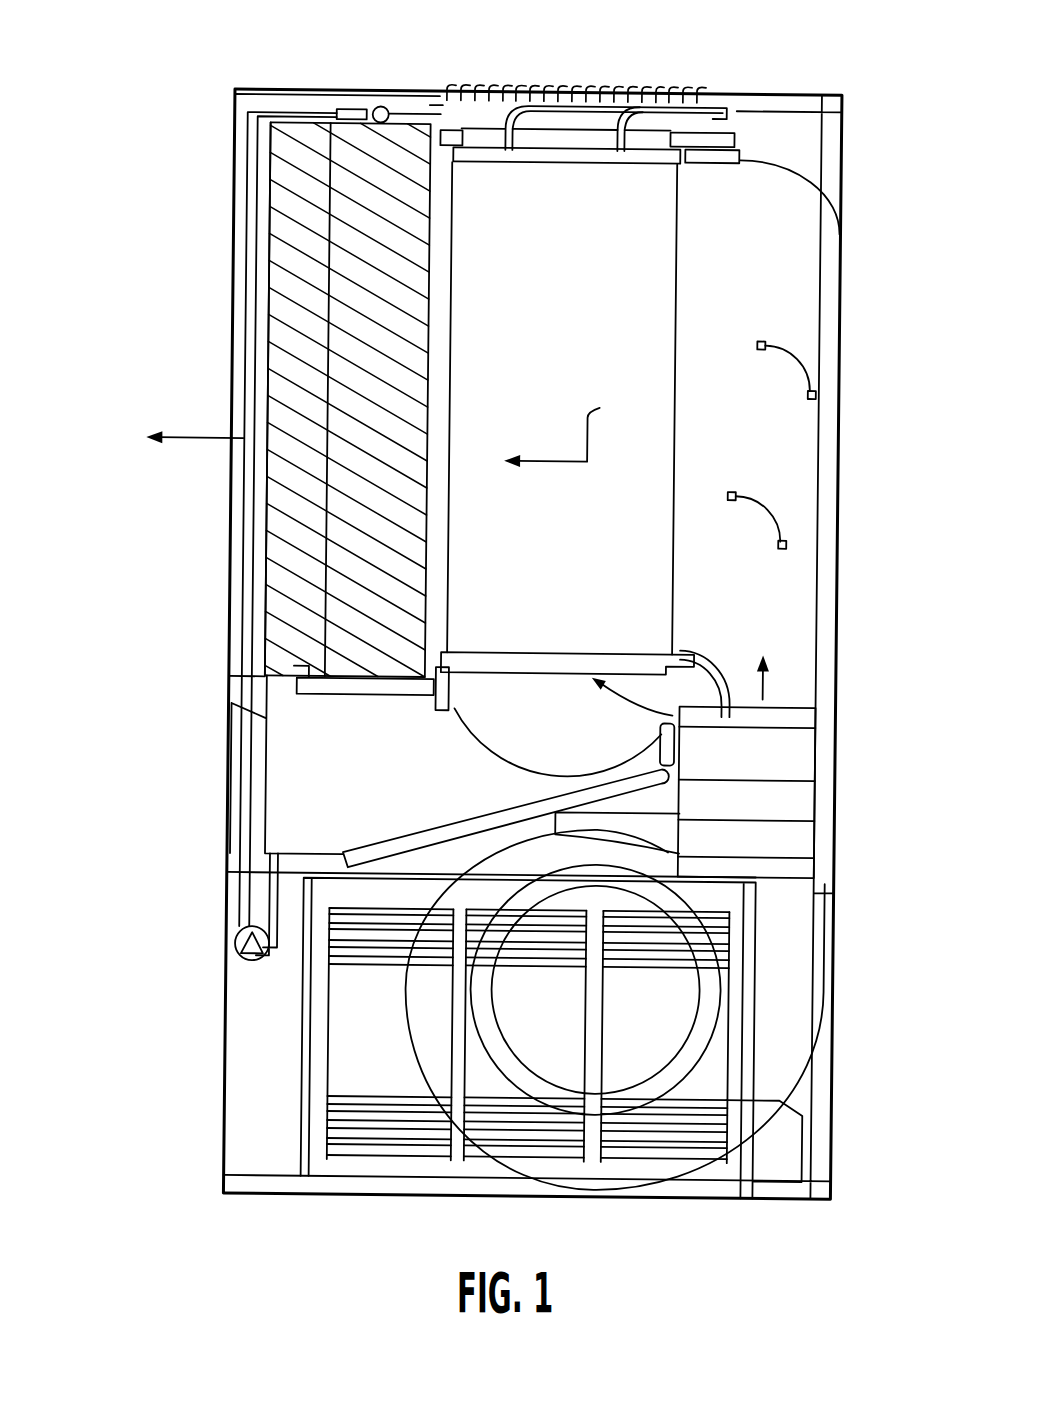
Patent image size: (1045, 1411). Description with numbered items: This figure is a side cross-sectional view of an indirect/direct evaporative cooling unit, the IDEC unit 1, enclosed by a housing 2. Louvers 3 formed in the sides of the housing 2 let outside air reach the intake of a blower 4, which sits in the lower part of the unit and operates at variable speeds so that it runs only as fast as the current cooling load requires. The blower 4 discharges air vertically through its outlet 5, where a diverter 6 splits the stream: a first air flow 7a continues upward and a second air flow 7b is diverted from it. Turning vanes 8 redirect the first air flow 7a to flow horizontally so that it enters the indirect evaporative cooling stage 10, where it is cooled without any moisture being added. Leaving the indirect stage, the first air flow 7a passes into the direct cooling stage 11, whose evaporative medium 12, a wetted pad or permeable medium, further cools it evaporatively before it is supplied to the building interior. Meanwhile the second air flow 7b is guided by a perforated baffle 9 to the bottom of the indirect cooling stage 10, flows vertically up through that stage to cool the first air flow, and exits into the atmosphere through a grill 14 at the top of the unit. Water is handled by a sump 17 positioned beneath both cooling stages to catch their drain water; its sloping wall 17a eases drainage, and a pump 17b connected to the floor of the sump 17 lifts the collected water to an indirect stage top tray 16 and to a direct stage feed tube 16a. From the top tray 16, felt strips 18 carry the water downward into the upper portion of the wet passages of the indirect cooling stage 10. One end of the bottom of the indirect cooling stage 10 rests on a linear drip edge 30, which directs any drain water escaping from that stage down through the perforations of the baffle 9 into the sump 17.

The IDEC unit 1 is at (156, 685).
The housing 2 is at (843, 178).
The louvers 3 is at (390, 1158).
The blower 4 is at (836, 1022).
The outlet 5 is at (798, 706).
The diverter 6 is at (724, 670).
The first air flow 7a is at (198, 440).
The second air flow 7b is at (684, 708).
The turning vanes 8 is at (795, 356).
The perforated baffle 9 is at (478, 743).
The indirect evaporative cooling stage 10 is at (568, 351).
The direct cooling stage 11 is at (273, 275).
The evaporative medium 12 is at (292, 203).
The grill 14 is at (566, 88).
The indirect stage top tray 16 is at (652, 145).
The direct stage feed tube 16a is at (382, 95).
The sump 17 is at (310, 762).
The sloping wall 17a is at (414, 832).
The pump 17b is at (240, 950).
The felt strips 18 is at (652, 148).
The linear drip edge 30 is at (680, 650).